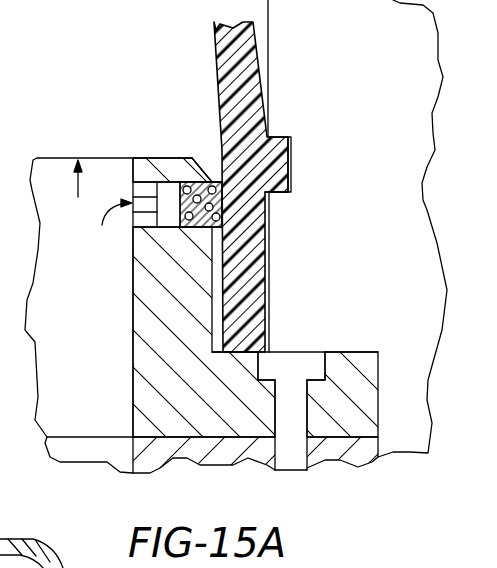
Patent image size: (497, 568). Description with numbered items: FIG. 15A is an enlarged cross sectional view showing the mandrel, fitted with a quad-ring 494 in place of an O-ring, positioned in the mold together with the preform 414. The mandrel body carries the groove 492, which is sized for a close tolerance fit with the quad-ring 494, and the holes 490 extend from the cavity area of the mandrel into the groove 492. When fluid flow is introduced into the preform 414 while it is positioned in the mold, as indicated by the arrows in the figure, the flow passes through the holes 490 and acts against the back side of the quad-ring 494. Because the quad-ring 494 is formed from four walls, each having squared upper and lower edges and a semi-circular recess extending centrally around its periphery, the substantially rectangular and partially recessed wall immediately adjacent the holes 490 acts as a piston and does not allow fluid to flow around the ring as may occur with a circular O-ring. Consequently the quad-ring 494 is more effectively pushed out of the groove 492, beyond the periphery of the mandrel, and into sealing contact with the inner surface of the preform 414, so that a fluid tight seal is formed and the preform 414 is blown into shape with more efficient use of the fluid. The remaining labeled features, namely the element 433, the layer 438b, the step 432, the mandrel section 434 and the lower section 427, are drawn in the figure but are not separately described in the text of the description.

The preform 414 is at (252, 58).
The arm face 433 is at (222, 160).
The thin layer 438b is at (290, 157).
The step 432 is at (265, 200).
The quad-ring 494 is at (219, 220).
The O-ring groove 492 is at (221, 222).
The housing block 434 is at (203, 305).
The base 427 is at (378, 420).
The holes 490 is at (145, 202).